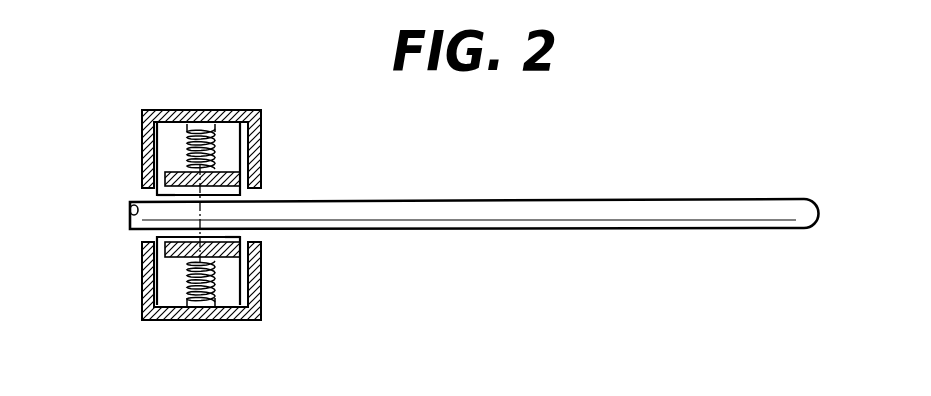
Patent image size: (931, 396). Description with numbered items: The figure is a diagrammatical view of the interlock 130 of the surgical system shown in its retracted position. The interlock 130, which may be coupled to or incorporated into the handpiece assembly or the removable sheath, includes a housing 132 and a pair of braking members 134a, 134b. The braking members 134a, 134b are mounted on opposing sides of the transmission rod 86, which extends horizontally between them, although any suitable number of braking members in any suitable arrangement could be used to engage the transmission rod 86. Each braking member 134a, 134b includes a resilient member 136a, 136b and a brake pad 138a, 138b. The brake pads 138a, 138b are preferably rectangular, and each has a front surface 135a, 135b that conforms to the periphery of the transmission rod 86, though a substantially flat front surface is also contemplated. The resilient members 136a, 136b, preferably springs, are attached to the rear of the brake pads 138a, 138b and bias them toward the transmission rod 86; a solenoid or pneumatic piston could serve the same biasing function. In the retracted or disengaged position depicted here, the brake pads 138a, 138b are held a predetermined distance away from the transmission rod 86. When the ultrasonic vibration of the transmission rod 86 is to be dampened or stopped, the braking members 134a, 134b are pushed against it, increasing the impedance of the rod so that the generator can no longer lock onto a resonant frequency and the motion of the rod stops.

The interlock 130 is at (243, 84).
The housing 132 is at (262, 117).
The braking member 134a is at (152, 146).
The braking member 134b is at (150, 252).
The front surface 135a is at (166, 196).
The front surface 135b is at (244, 231).
The resilient member 136a is at (192, 123).
The resilient member 136b is at (197, 300).
The brake pad 138a is at (238, 181).
The brake pad 138b is at (171, 242).
The transmission rod 86 is at (523, 168).